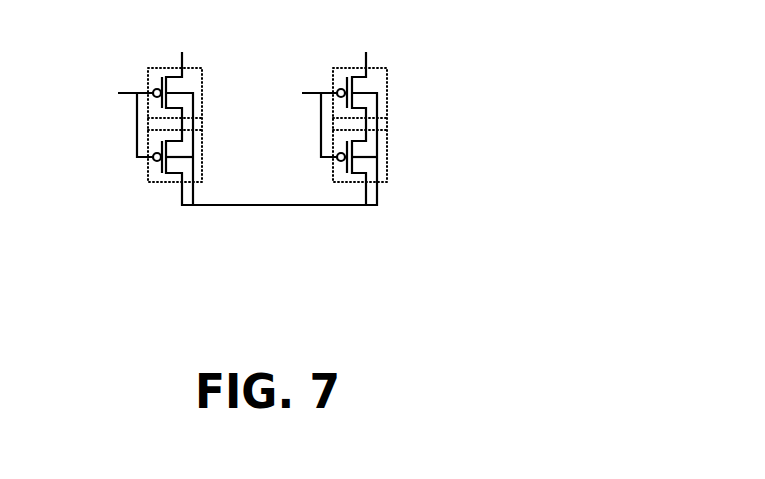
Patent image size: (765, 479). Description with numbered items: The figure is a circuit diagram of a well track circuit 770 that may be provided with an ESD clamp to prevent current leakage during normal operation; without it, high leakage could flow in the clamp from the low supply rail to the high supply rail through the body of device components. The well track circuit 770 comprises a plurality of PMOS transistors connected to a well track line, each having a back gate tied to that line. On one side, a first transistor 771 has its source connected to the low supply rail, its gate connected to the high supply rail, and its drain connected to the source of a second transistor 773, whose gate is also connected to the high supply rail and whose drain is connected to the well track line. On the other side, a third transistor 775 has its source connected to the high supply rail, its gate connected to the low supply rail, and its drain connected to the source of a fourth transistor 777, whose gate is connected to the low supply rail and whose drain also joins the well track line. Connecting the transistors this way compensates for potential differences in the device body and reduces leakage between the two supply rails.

The well track circuit 770 is at (650, 304).
The first transistor 771 is at (148, 70).
The second transistor 773 is at (148, 175).
The third transistor 775 is at (388, 70).
The fourth transistor 777 is at (388, 175).